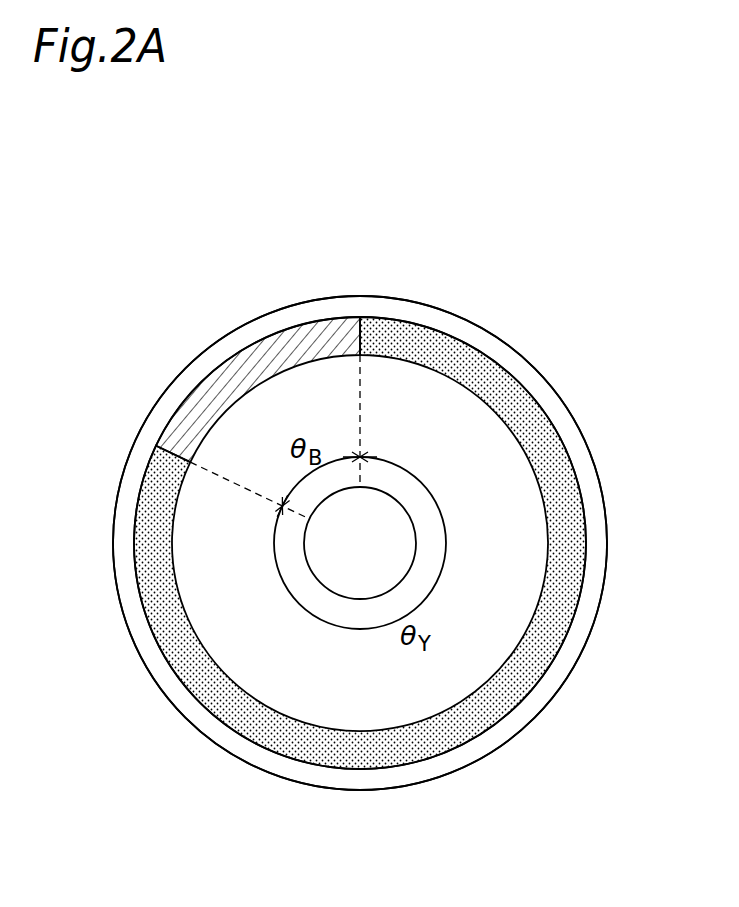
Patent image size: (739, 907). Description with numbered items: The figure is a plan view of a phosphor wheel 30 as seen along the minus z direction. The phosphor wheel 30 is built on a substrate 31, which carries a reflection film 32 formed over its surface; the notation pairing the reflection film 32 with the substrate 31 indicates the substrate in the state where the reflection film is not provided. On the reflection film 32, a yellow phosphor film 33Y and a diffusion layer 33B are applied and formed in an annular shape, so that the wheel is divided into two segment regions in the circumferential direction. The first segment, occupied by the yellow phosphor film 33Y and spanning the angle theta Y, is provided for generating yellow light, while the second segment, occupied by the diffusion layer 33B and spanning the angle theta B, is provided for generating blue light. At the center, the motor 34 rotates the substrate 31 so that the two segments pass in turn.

The developing roller 30 is at (189, 186).
The base body 31 is at (360, 496).
The outer peripheral surface 32 is at (450, 328).
The first region (B) 33B is at (257, 363).
The second region (Y) 33Y is at (520, 677).
The shaft 34 is at (353, 572).